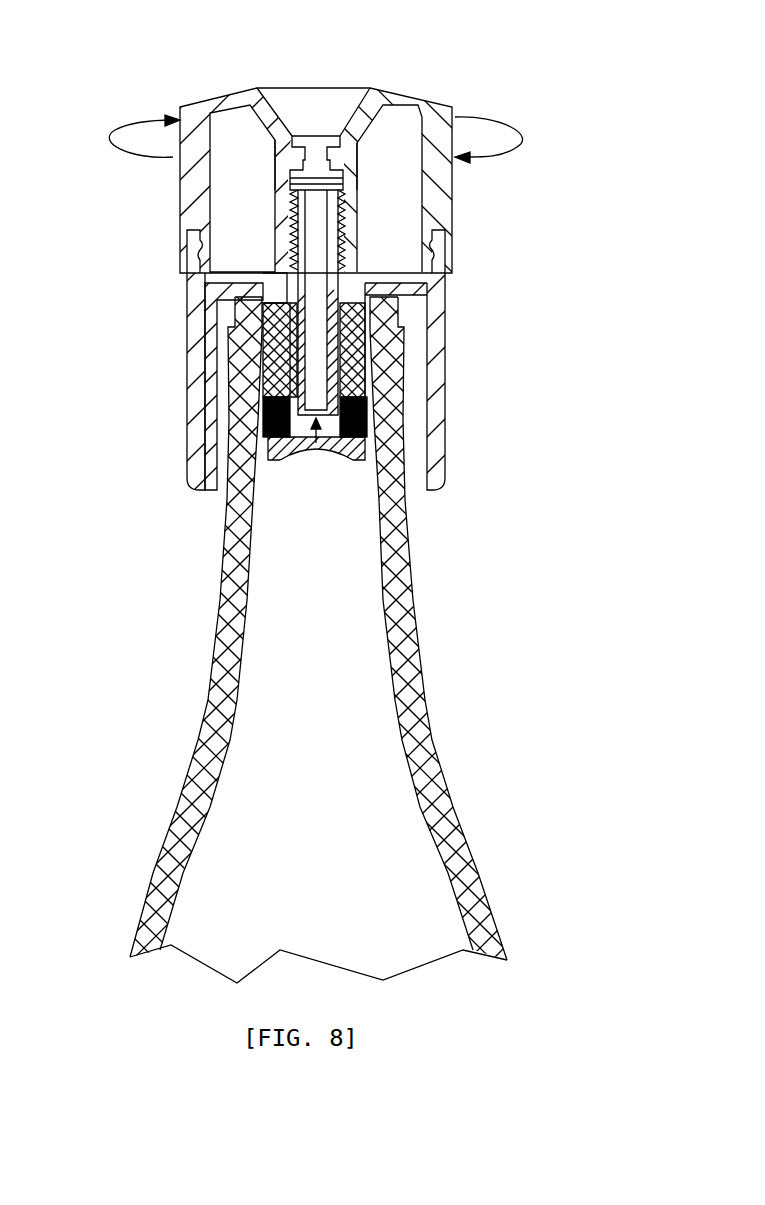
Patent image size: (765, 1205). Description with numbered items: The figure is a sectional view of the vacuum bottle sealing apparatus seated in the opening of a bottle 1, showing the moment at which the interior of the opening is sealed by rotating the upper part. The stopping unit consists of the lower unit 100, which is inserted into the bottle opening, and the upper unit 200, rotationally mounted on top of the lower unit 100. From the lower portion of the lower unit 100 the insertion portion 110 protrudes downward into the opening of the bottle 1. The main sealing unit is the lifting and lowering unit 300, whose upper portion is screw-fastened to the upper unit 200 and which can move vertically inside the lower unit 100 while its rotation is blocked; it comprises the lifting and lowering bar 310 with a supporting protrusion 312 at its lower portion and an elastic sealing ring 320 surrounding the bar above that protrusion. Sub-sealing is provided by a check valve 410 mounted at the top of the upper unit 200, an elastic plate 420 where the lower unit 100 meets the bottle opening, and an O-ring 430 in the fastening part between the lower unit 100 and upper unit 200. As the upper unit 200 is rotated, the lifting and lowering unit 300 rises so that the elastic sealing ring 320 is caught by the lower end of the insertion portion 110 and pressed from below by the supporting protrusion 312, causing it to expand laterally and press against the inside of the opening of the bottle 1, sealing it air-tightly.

The bottle 1 is at (224, 616).
The lower unit 100 is at (187, 393).
The insertion portion 110 is at (365, 337).
The upper unit 200 is at (180, 212).
The lifting and lowering unit 300 is at (314, 466).
The lifting and lowering bar 310 is at (368, 308).
The supporting protrusion 312 is at (368, 448).
The elastic sealing ring 320 is at (368, 416).
The check valve 410 is at (292, 134).
The elastic plate 420 is at (206, 300).
The O-ring 430 is at (189, 241).